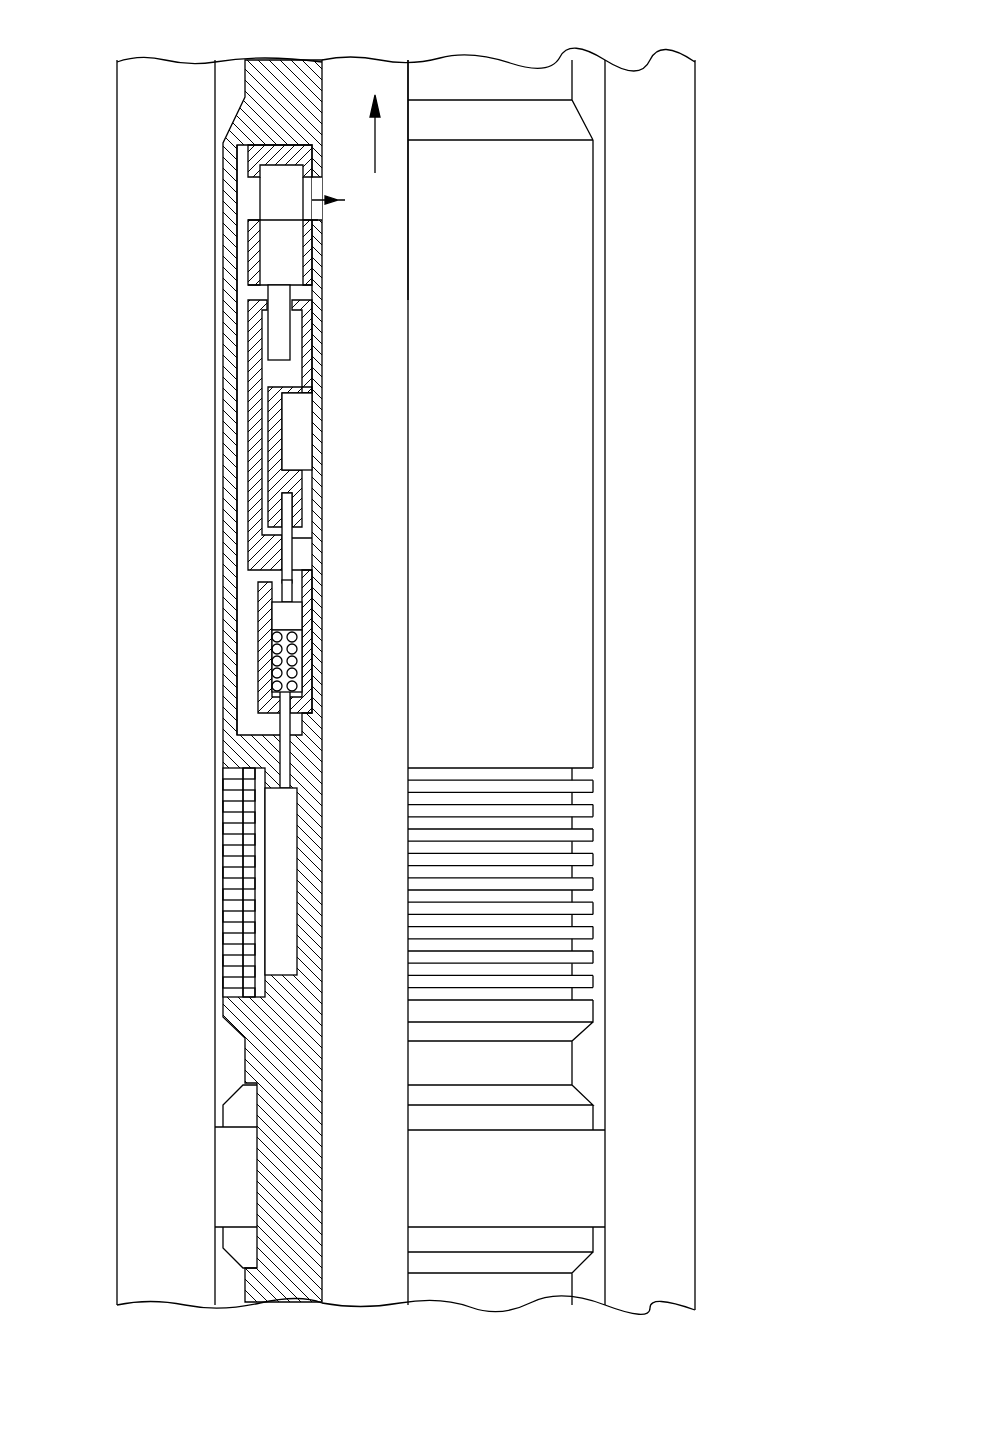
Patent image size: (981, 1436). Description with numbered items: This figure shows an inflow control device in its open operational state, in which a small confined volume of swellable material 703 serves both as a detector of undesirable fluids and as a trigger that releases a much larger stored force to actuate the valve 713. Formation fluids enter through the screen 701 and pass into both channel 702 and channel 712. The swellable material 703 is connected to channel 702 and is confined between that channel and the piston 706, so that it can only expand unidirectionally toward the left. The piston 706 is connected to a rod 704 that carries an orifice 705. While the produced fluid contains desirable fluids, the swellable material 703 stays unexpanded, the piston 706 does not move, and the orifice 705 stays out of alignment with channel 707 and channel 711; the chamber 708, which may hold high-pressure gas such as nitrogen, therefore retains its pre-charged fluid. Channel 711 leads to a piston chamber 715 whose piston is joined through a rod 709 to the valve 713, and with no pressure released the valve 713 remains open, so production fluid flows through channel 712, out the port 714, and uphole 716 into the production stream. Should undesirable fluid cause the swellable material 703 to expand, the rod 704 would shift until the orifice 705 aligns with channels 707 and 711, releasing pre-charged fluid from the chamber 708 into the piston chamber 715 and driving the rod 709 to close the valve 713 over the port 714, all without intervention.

The screen 701 is at (223, 978).
The channel 702 is at (283, 702).
The swellable material 703 is at (275, 677).
The rod 704 is at (285, 592).
The orifice 705 is at (285, 553).
The piston 706 is at (278, 615).
The channel 707 is at (307, 505).
The chamber 708 is at (303, 417).
The rod 709 is at (437, 668).
The channel 711 is at (263, 405).
The channel 712 is at (243, 265).
The valve 713 is at (292, 233).
The port 714 is at (250, 200).
The piston chamber 715 is at (300, 342).
The uphole 716 is at (358, 88).